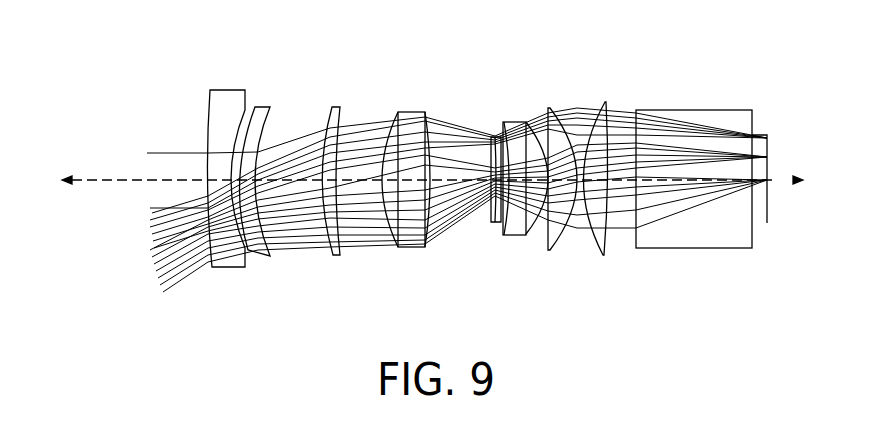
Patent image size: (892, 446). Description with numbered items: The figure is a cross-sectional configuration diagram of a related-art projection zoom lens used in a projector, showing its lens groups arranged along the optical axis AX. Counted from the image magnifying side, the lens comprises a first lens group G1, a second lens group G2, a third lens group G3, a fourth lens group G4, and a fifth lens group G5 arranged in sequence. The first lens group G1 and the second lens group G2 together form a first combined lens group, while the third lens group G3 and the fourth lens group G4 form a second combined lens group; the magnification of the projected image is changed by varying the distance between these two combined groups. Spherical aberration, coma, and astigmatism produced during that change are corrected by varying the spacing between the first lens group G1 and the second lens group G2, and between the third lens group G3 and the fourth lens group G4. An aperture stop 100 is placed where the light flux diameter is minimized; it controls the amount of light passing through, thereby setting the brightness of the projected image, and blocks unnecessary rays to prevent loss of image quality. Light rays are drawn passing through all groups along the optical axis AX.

The first lens group G1 is at (242, 86).
The second lens group G2 is at (338, 101).
The third lens group G3 is at (410, 108).
The fourth lens group G4 is at (562, 100).
The fifth lens group G5 is at (603, 100).
The aperture stop 100 is at (490, 226).
The optical axis AX is at (110, 181).